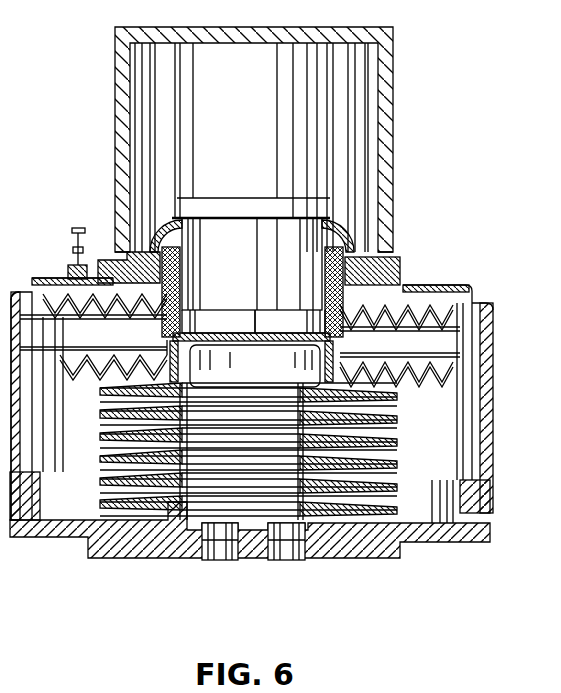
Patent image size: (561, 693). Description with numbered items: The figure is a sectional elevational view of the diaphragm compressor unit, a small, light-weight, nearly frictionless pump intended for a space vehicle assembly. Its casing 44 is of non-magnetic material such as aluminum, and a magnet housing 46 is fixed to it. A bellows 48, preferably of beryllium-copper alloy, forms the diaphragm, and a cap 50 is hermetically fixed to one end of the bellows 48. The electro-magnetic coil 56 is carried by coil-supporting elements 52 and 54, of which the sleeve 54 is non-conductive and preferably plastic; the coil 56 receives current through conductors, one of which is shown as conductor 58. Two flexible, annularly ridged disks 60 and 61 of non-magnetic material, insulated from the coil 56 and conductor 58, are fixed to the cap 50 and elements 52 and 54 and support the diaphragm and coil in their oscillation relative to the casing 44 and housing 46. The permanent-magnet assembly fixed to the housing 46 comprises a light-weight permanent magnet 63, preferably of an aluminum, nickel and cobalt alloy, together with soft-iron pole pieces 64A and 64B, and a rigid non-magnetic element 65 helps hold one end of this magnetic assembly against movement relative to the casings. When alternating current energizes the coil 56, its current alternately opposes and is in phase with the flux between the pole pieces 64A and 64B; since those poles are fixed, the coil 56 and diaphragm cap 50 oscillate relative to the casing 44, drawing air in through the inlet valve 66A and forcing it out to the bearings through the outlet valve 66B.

The casing 44 is at (493, 383).
The magnet housing 46 is at (393, 83).
The bellows 48 is at (385, 431).
The cap 50 is at (235, 347).
The coil-supporting element 52 is at (208, 333).
The sleeve 54 is at (290, 321).
The electro-magnetic coil 56 is at (343, 250).
The conductor 58 is at (168, 348).
The flexible annularly ridged disk 60 is at (110, 317).
The flexible annularly ridged disk 61 is at (73, 383).
The permanent magnet 63 is at (245, 113).
The pole piece 64A is at (252, 264).
The pole piece 64B is at (412, 285).
The rigid element 65 is at (163, 227).
The inlet valve 66A is at (290, 562).
The outlet valve 66B is at (215, 560).